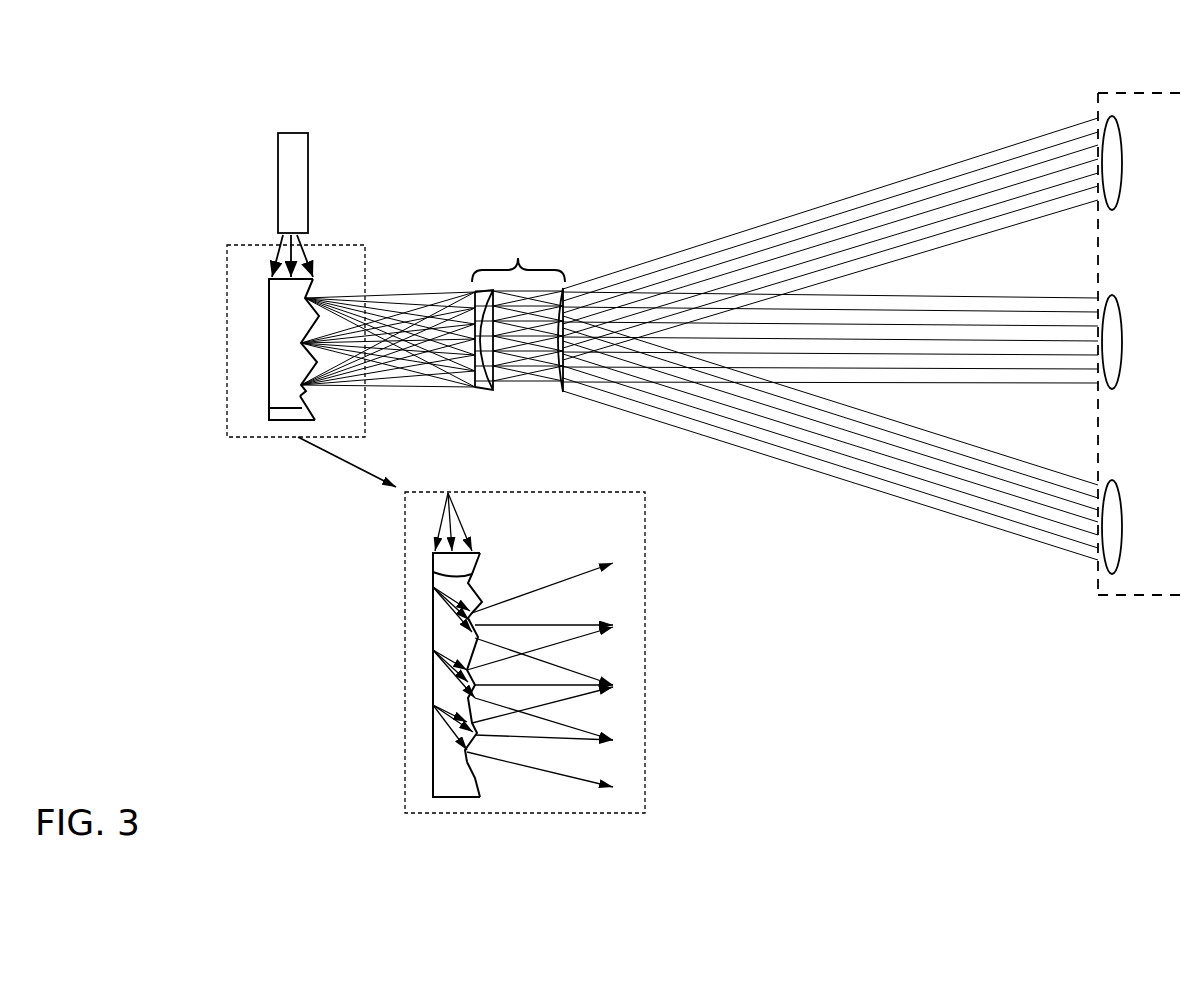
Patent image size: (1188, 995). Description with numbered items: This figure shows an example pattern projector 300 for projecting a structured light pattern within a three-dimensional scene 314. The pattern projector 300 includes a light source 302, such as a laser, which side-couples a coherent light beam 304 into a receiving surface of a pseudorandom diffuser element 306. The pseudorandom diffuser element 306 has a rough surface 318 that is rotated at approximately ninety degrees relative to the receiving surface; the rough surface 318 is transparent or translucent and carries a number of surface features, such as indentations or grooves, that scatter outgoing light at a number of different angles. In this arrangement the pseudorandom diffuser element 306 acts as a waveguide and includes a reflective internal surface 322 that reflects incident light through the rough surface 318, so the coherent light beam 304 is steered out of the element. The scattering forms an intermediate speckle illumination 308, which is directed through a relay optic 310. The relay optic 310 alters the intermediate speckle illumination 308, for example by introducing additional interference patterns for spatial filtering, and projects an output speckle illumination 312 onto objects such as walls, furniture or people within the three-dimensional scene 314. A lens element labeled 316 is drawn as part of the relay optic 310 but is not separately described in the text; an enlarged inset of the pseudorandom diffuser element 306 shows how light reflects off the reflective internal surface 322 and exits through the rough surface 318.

The pattern projector 300 is at (198, 139).
The light source 302 is at (278, 197).
The coherent light beam 304 is at (283, 246).
The pseudorandom diffuser element 306 is at (268, 330).
The intermediate speckle illumination 308 is at (390, 296).
The relay optic 310 is at (518, 256).
The output speckle illumination 312 is at (925, 198).
The three-dimensional scene 314 is at (1097, 93).
The first lens 316 is at (474, 325).
The rough surface 318 is at (300, 392).
The reflective internal surface 322 is at (302, 402).